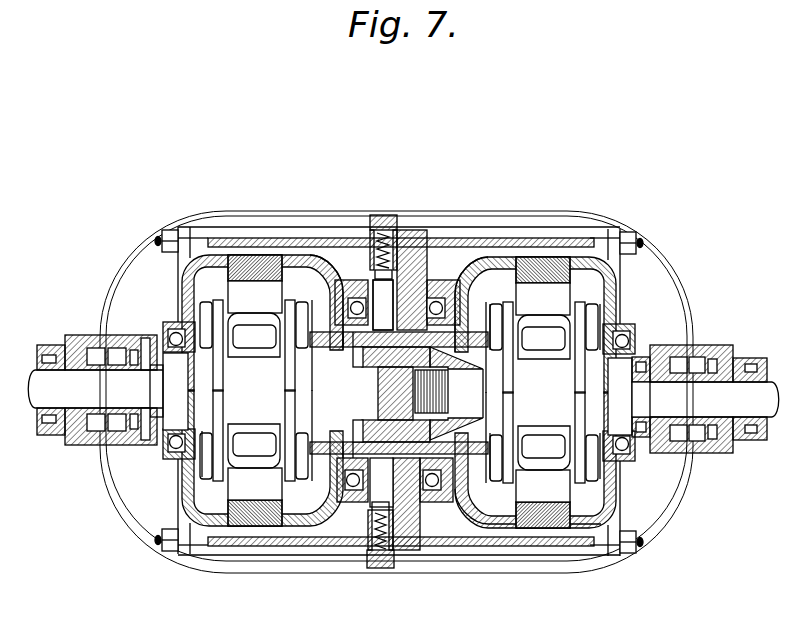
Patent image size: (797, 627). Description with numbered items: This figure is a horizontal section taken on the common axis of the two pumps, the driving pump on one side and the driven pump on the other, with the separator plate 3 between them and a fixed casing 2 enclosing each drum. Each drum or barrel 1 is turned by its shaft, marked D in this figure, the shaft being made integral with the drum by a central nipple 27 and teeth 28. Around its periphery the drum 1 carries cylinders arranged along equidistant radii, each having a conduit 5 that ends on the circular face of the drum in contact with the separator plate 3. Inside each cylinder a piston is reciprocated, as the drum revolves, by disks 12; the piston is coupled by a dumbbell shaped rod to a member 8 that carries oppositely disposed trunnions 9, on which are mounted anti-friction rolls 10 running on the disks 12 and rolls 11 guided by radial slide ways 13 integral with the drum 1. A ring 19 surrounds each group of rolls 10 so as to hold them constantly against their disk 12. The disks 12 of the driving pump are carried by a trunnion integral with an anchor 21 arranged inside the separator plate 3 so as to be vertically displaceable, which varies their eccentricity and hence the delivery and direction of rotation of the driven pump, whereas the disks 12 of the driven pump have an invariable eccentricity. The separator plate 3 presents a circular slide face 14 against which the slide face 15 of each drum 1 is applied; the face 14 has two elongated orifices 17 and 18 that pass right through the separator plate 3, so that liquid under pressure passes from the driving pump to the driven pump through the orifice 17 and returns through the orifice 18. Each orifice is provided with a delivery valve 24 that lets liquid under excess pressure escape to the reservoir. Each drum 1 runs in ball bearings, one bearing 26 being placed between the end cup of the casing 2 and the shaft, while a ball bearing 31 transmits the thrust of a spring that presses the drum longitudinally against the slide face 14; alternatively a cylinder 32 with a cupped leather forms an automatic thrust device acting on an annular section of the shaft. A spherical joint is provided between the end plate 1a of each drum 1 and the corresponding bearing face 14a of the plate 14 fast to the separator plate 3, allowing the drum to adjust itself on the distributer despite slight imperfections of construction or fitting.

The drum 1 is at (604, 502).
The fixed casing 2 is at (178, 502).
The separator plate 3 is at (450, 405).
The conduit 5 is at (322, 278).
The member 8 is at (399, 391).
The trunnions 9 is at (220, 327).
The anti-friction rolls 10 is at (188, 283).
The anti-friction rolls 11 is at (213, 317).
The end plate 1a is at (347, 330).
The disks 12 is at (290, 408).
The radial slide ways 13 is at (497, 307).
The circular slide face 14 is at (363, 347).
The bearing face 14a is at (352, 401).
The slide face 15 is at (343, 442).
The orifice 17 is at (411, 233).
The orifice 18 is at (358, 527).
The ring 19 is at (218, 308).
The anchor 21 is at (378, 402).
The delivery valve 24 is at (389, 224).
The ball bearing 26 is at (162, 331).
The central nipple 27 is at (196, 398).
The teeth 28 is at (196, 357).
The ball bearing 31 is at (148, 452).
The cylinder 32 is at (130, 438).
The drive shaft D is at (78, 391).